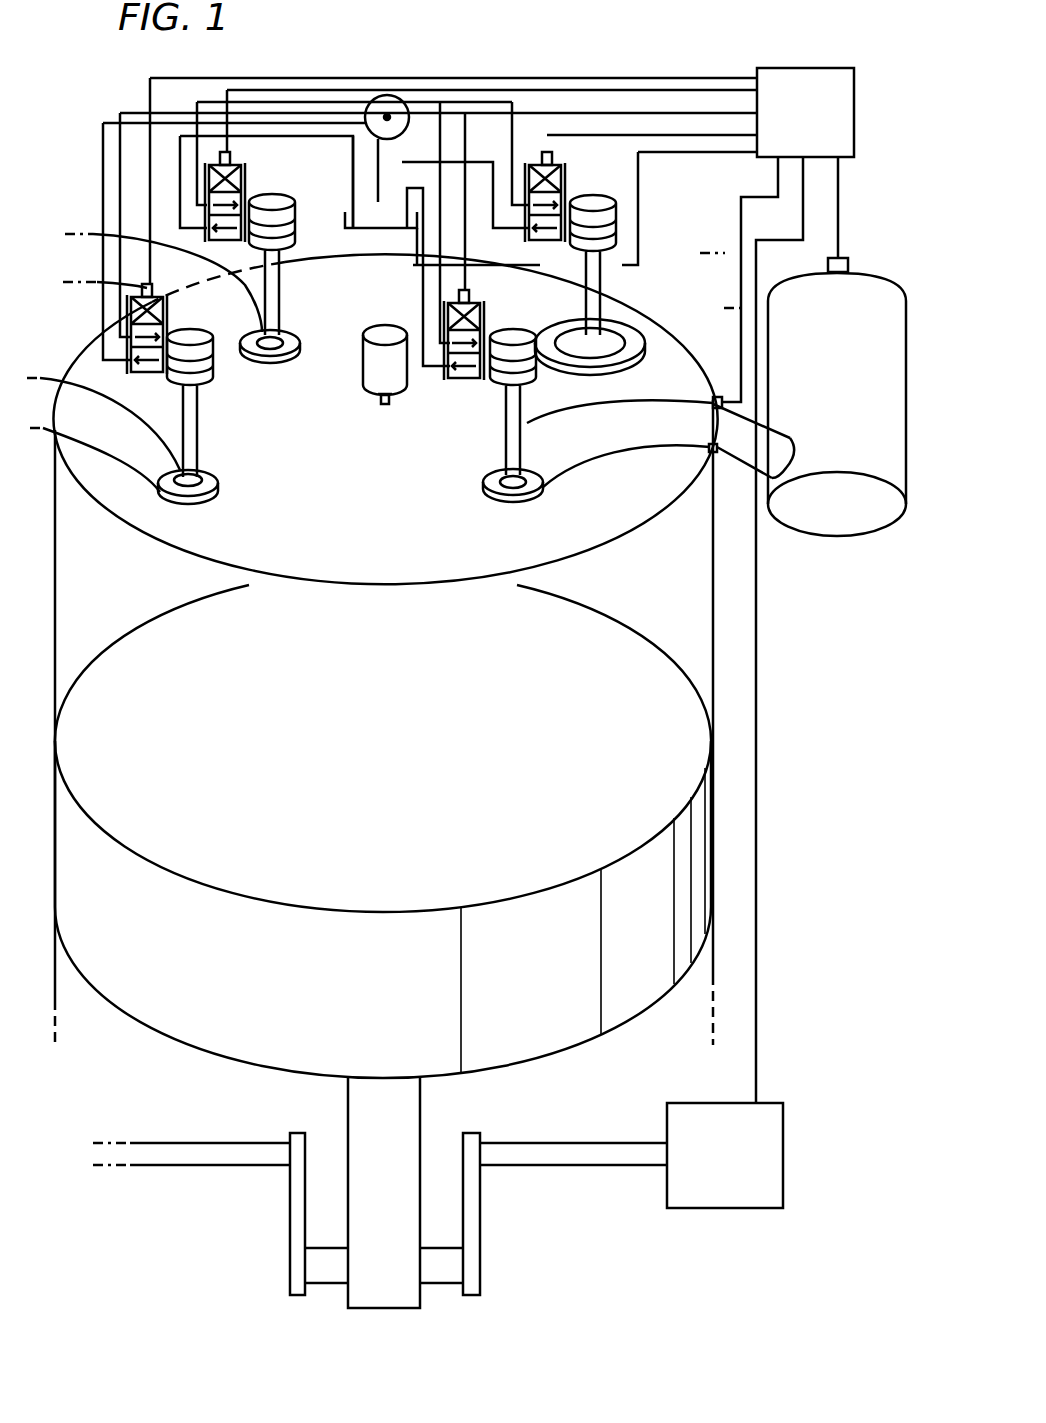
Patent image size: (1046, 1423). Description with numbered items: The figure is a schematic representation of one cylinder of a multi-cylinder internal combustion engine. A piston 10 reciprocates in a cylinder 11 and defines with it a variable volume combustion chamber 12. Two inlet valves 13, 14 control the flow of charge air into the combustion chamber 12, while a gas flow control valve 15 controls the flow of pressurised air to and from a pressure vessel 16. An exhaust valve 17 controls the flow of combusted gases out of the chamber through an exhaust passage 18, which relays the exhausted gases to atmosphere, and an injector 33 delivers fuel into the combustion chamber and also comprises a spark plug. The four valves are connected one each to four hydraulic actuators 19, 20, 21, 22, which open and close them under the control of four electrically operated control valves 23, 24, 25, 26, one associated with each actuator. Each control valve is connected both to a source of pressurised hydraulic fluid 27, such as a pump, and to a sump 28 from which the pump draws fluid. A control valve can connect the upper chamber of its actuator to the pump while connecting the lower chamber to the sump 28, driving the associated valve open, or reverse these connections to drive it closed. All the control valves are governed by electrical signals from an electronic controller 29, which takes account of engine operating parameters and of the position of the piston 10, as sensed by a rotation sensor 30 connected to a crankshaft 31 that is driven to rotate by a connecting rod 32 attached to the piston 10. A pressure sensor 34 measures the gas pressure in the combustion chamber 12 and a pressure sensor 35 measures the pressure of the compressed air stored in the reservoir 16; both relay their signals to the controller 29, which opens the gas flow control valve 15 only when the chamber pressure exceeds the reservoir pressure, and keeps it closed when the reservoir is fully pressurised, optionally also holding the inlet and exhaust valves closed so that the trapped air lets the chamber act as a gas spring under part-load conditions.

The piston 10 is at (394, 825).
The cylinder 11 is at (55, 676).
The variable volume combustion chamber 12 is at (648, 597).
The inlet valve 13 is at (219, 493).
The inlet valve 14 is at (301, 343).
The gas flow control valve 15 is at (531, 491).
The pressure vessel 16 is at (834, 521).
The exhaust valve 17 is at (626, 369).
The exhaust passage 18 is at (604, 289).
The hydraulic actuator 19 is at (213, 379).
The hydraulic actuator 20 is at (296, 244).
The hydraulic actuator 21 is at (606, 211).
The hydraulic actuator 22 is at (502, 379).
The control valve 23 is at (167, 312).
The control valve 24 is at (243, 184).
The control valve 25 is at (562, 186).
The control valve 26 is at (482, 320).
The source of pressurised hydraulic fluid 27 is at (386, 96).
The sump 28 is at (345, 226).
The electronic controller 29 is at (812, 133).
The rotation sensor 30 is at (733, 1173).
The crankshaft 31 is at (566, 1156).
The connecting rod 32 is at (392, 1288).
The injector 33 is at (388, 406).
The pressure sensor 34 is at (717, 396).
The pressure sensor 35 is at (848, 262).